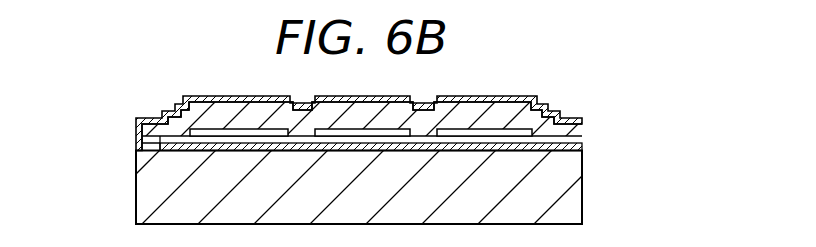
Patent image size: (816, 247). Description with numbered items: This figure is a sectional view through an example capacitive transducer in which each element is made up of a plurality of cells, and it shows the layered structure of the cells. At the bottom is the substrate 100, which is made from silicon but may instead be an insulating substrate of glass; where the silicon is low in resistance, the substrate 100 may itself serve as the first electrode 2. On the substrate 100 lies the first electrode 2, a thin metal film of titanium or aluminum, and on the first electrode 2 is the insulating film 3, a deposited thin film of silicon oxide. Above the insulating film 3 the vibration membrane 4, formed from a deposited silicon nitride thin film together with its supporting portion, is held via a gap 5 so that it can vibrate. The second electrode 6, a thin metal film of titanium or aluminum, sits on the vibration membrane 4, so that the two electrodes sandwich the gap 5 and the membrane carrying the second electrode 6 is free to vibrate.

The substrate 100 is at (572, 203).
The first electrode 2 is at (563, 137).
The insulating film 3 is at (142, 144).
The vibration membrane 4 is at (155, 125).
The gap 5 is at (483, 130).
The second electrode 6 is at (198, 97).